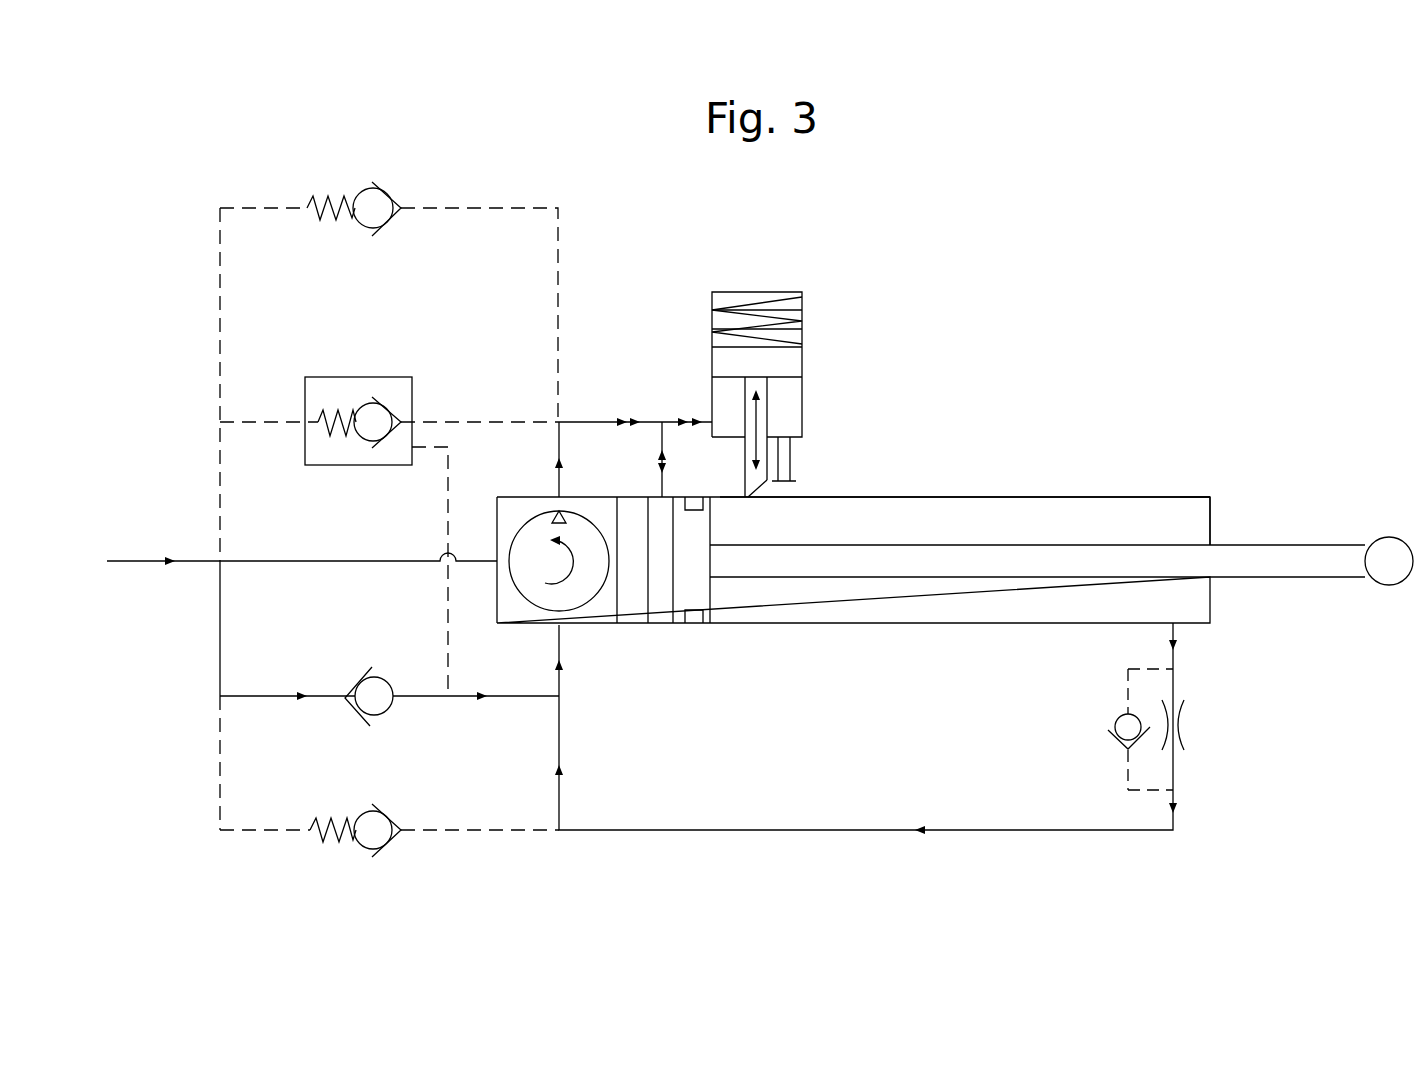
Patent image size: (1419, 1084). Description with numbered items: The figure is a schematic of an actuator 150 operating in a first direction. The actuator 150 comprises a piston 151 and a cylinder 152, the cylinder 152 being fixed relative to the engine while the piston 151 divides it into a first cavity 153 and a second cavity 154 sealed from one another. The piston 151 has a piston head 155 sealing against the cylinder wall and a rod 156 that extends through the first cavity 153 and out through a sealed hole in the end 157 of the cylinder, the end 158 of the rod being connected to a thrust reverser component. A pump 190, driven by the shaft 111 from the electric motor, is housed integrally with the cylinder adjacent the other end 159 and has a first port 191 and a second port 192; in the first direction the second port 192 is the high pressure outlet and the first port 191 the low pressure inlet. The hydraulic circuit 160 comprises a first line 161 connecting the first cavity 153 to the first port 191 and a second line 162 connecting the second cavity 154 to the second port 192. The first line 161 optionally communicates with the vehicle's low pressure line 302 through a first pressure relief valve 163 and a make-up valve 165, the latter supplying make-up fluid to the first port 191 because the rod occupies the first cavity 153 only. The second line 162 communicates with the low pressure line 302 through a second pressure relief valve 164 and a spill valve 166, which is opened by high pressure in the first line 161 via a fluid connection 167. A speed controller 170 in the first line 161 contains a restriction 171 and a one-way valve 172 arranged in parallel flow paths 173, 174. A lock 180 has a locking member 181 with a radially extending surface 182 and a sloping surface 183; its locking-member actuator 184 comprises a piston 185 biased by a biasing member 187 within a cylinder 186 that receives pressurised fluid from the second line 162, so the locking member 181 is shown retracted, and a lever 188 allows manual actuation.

The shaft 111 is at (330, 564).
The actuator 150 is at (992, 272).
The piston 151 is at (1172, 556).
The cylinder 152 is at (1095, 496).
The first cavity 153 is at (908, 613).
The second cavity 154 is at (657, 612).
The piston head 155 is at (706, 625).
The rod 156 is at (1315, 578).
The end of the cylinder 157 is at (1212, 505).
The end of rod 158 is at (1390, 537).
The other end of the cylinder 159 is at (646, 583).
The hydraulic circuit 160 is at (611, 280).
The first line 161 is at (1035, 833).
The second line 162 is at (596, 418).
The first pressure relief valve 163 is at (345, 865).
The second pressure relief valve 164 is at (346, 182).
The make-up valve 165 is at (384, 733).
The spill valve 166 is at (338, 368).
The fluid connection 167 is at (446, 508).
The speed controller 170 is at (1205, 746).
The restriction 171 is at (1182, 718).
The one-way valve 172 is at (1112, 718).
The flow path 173 is at (1180, 683).
The flow path 174 is at (1128, 680).
The lock 180 is at (804, 282).
The locking member 181 is at (768, 402).
The radially extending surface 182 is at (744, 472).
The sloping surface 183 is at (760, 484).
The locking-member actuator 184 is at (810, 335).
The piston 185 is at (797, 362).
The cylinder 186 is at (712, 305).
The biasing member 187 is at (752, 300).
The lever 188 is at (788, 447).
The pump 190 is at (581, 606).
The first port 191 is at (554, 612).
The second port 192 is at (556, 510).
The low pressure line 302 is at (142, 563).